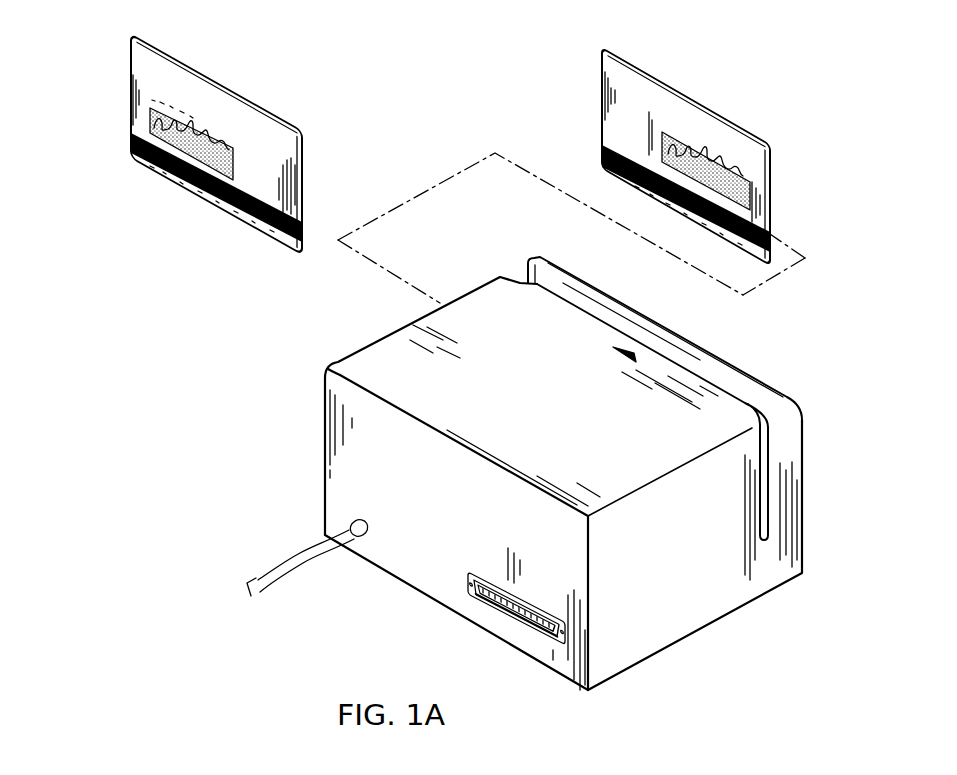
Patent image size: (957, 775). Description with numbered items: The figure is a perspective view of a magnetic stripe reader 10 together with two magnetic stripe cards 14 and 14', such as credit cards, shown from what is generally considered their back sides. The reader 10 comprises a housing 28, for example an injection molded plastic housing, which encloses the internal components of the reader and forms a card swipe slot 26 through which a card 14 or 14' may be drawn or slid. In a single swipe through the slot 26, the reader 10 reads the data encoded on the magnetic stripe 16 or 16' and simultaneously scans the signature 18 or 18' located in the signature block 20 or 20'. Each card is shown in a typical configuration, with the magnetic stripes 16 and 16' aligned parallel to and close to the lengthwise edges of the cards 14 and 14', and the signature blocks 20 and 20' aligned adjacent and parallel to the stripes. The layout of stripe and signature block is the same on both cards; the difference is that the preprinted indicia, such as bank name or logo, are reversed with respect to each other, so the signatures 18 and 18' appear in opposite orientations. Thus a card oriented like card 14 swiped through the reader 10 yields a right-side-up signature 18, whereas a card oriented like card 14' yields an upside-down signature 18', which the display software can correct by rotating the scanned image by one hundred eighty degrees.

The magnetic stripe reader 10 is at (276, 359).
The magnetic stripe card 14 is at (222, 145).
The magnetic stripe card 14' is at (686, 149).
The magnetic stripe 16 is at (177, 187).
The magnetic stripe 16' is at (646, 174).
The signature 18 is at (139, 119).
The signature 18' is at (756, 171).
The signature block 20 is at (137, 130).
The signature block 20' is at (765, 192).
The card swipe slot 26 is at (735, 400).
The housing 28 is at (688, 636).